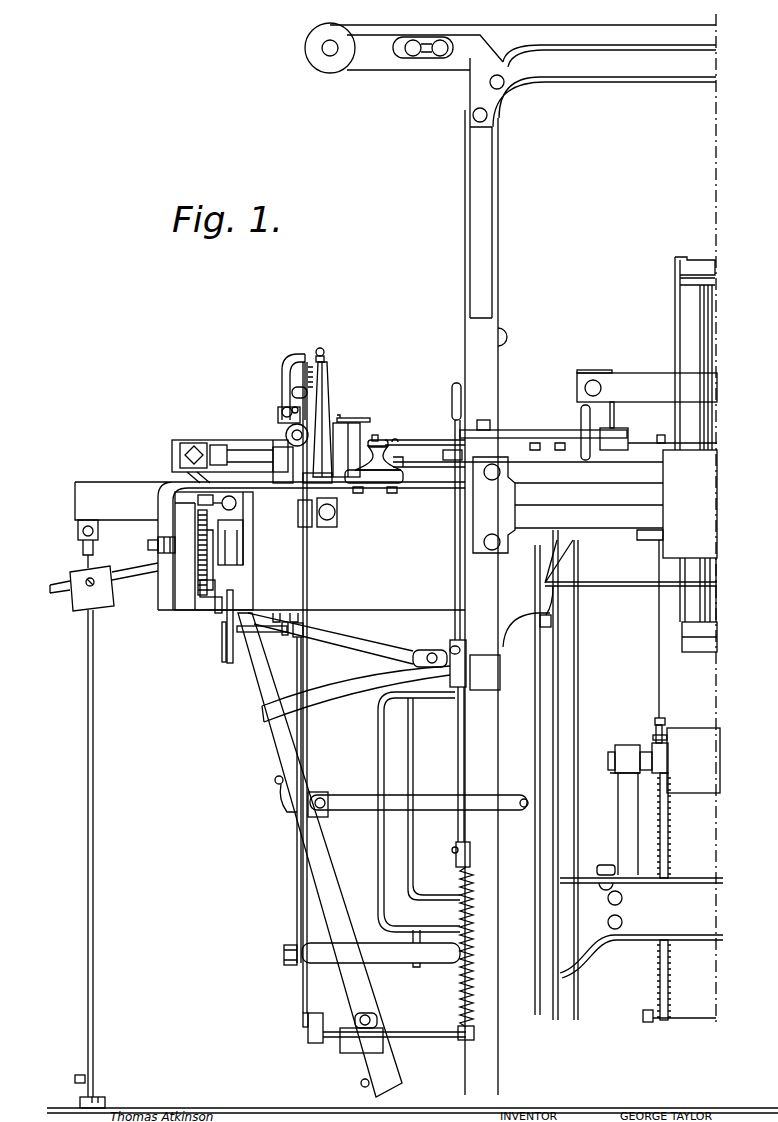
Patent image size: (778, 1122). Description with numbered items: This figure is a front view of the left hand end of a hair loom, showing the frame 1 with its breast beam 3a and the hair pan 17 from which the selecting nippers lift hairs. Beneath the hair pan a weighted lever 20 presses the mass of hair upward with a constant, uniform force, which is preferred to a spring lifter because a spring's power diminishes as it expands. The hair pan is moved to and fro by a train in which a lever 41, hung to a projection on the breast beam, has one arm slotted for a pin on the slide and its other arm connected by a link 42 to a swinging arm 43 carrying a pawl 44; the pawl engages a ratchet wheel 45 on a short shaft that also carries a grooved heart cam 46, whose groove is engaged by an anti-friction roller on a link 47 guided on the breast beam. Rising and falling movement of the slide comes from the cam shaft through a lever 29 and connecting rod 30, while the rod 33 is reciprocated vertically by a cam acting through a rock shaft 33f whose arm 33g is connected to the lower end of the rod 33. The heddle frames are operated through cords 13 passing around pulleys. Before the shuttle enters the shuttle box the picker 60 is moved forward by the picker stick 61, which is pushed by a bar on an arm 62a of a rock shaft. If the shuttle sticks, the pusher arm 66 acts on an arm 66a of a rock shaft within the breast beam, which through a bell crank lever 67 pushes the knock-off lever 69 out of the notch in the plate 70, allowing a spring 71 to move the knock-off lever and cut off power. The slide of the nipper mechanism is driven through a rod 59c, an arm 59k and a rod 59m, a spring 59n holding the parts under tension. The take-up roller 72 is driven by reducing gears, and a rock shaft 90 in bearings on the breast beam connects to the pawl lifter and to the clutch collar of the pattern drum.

The cords 13 is at (540, 26).
The frame 1 is at (486, 576).
The hair pan 17 is at (270, 552).
The weighted lever 20 is at (138, 575).
The link 47 is at (147, 546).
The ratchet wheel 45 is at (198, 531).
The grooved heart cam 46 is at (194, 560).
The pawl 44 is at (199, 590).
The swinging arm 43 is at (217, 612).
The link 42 is at (230, 664).
The lever 41 is at (222, 643).
The connecting rod 30 is at (297, 664).
The rod 33 is at (309, 565).
The picker stick 61 is at (192, 441).
The picker 60 is at (221, 446).
The arm 62a is at (392, 635).
The lever 29 is at (381, 955).
The knock-off lever 69 is at (452, 403).
The plate 70 is at (447, 462).
The breast beam 3a is at (524, 484).
The bell crank lever 67 is at (517, 418).
The arm 66 is at (647, 410).
The arm 66a is at (580, 418).
The take-up roller 72 is at (690, 504).
The rock shaft 90 is at (618, 588).
The rod 59m is at (659, 700).
The spring 59n is at (670, 851).
The arm 59k is at (670, 1010).
The rod 59c is at (703, 1018).
The spring 71 is at (458, 990).
The arm 33g is at (308, 1033).
The rock shaft 33f is at (333, 1044).